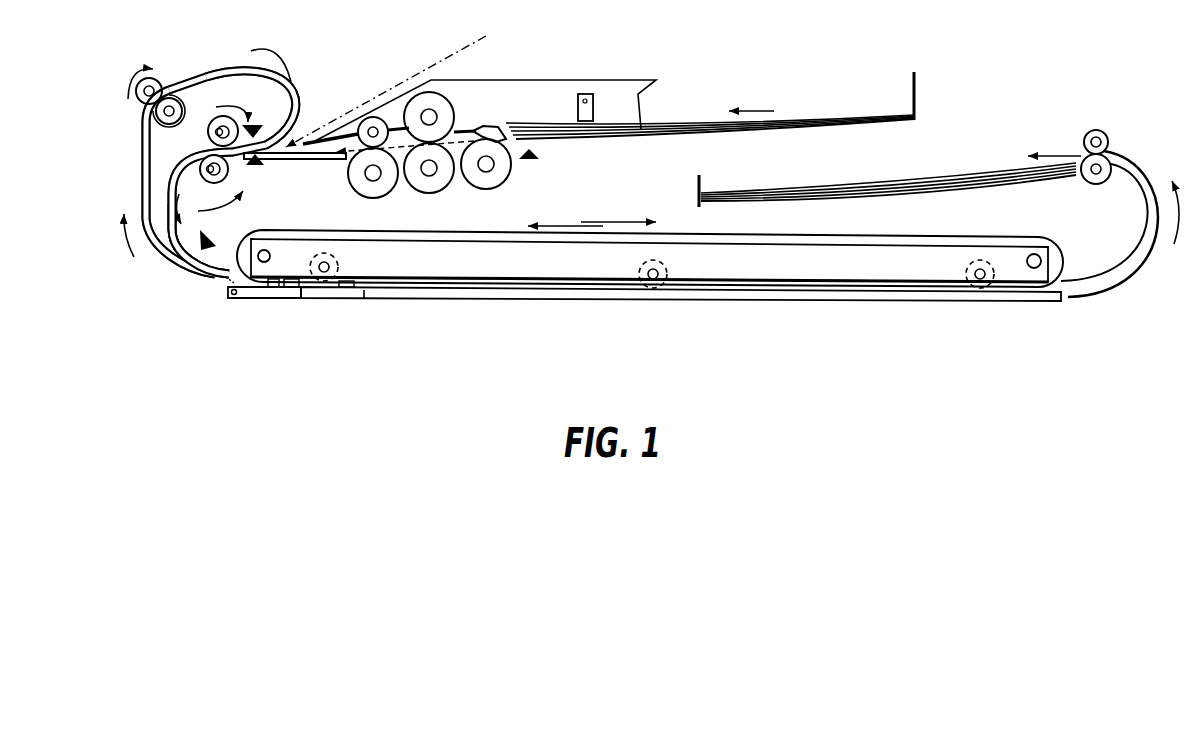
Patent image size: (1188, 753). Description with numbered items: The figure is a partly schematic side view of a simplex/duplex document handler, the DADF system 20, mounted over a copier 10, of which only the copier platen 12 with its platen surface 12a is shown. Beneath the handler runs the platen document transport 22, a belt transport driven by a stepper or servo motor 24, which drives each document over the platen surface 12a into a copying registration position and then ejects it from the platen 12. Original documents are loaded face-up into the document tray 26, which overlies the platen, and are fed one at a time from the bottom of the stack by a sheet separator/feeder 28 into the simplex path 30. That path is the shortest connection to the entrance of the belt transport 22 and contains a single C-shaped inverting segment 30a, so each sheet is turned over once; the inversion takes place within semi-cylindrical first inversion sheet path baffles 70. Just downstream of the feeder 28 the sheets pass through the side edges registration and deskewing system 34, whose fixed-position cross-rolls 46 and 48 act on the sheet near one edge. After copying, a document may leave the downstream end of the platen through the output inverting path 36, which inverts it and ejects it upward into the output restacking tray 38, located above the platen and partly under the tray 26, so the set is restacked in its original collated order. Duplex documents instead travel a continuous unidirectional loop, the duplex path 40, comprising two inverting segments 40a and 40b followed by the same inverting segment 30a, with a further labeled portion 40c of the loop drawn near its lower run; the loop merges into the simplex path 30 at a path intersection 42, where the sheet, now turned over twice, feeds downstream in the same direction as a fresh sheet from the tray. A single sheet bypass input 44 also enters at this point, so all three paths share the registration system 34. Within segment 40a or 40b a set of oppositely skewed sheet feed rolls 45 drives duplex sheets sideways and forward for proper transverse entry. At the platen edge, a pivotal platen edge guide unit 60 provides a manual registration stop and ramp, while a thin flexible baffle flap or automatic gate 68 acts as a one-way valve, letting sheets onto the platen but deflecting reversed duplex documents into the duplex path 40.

The copier 10 is at (788, 363).
The copier platen 12 is at (450, 293).
The platen surface 12a is at (363, 290).
The DADF system 20 is at (684, 66).
The platen document transport 22 is at (495, 205).
The stepper or servo motor 24 is at (1030, 263).
The document tray 26 is at (755, 125).
The sheet separator/feeder 28 is at (468, 110).
The simplex path 30 is at (162, 205).
The inverting segment 30a is at (162, 280).
The side edges registration and deskewing system 34 is at (147, 128).
The output inverting path 36 is at (1163, 215).
The output restacking tray 38 is at (947, 187).
The duplex path 40 is at (140, 165).
The inverting segment 40a is at (187, 138).
The inverting segment 40b is at (307, 88).
The belt lower run 40c is at (170, 237).
The path intersection 42 is at (278, 153).
The single sheet bypass input 44 is at (305, 127).
The sheet feed rolls 45 is at (172, 70).
The cross-roll 46 is at (217, 122).
The cross-roll 48 is at (233, 168).
The pivotal platen edge guide unit 60 is at (260, 290).
The baffle flap or automatic gate 68 is at (207, 283).
The first inversion sheet path baffles 70 is at (185, 238).